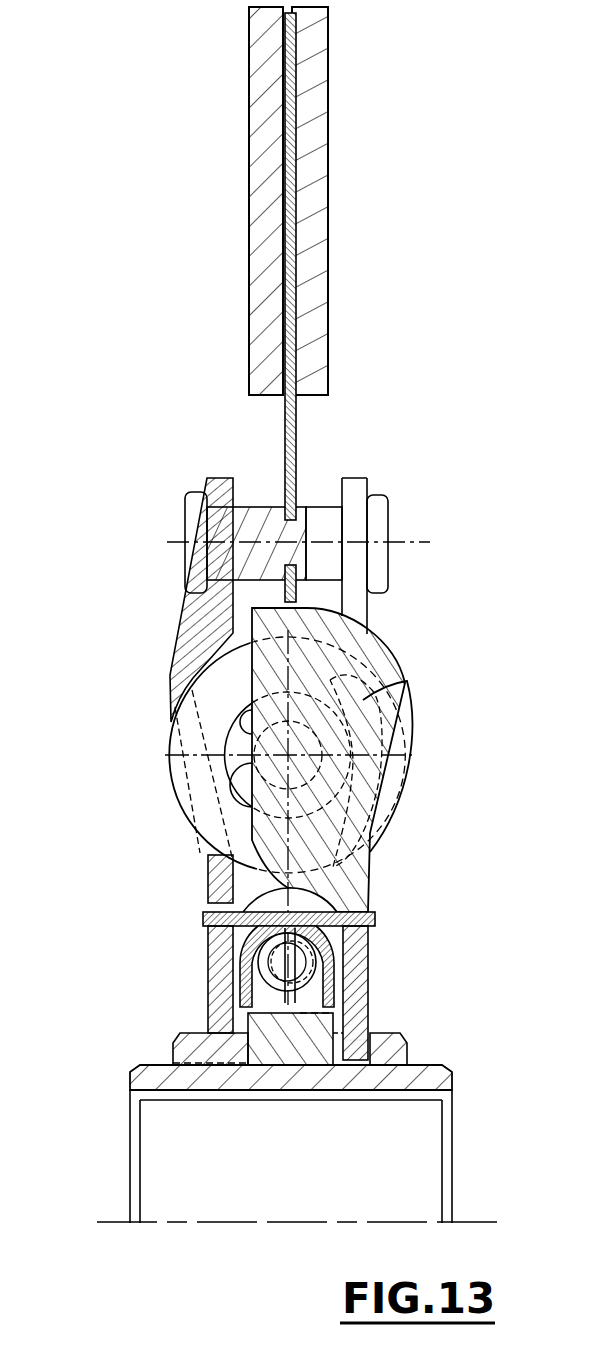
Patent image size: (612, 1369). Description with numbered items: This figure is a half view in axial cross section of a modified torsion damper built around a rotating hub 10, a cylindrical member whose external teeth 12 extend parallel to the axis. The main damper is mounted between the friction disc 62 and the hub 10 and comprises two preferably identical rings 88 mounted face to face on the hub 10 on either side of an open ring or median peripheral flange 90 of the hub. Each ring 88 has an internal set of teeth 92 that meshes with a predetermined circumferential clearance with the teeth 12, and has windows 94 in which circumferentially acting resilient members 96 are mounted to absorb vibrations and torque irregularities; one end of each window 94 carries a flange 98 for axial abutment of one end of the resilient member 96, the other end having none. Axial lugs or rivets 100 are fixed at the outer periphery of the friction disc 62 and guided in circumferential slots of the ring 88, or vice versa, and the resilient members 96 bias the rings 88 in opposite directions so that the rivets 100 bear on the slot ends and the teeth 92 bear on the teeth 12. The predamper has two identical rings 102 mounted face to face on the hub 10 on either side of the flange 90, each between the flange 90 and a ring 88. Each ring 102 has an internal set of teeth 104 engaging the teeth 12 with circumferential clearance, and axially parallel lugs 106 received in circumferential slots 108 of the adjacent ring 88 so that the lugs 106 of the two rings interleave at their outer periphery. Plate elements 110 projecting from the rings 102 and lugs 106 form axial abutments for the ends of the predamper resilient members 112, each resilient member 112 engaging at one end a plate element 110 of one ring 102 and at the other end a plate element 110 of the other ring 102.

The hub 10 is at (127, 1093).
The teeth 12 is at (172, 1057).
The friction disc 62 is at (283, 425).
The rings 88 is at (197, 643).
The median peripheral flange 90 is at (283, 1030).
The internal set of teeth 92 is at (357, 1045).
The windows 94 is at (178, 693).
The resilient members 96 is at (173, 793).
The flange 98 is at (381, 683).
The rivets 100 is at (198, 528).
The rings 102 is at (217, 993).
The internal set of teeth 104 is at (337, 1047).
The lugs 106 is at (205, 920).
The circumferential slots 108 is at (208, 903).
The plate elements 110 is at (297, 960).
The resilient members 112 is at (257, 947).